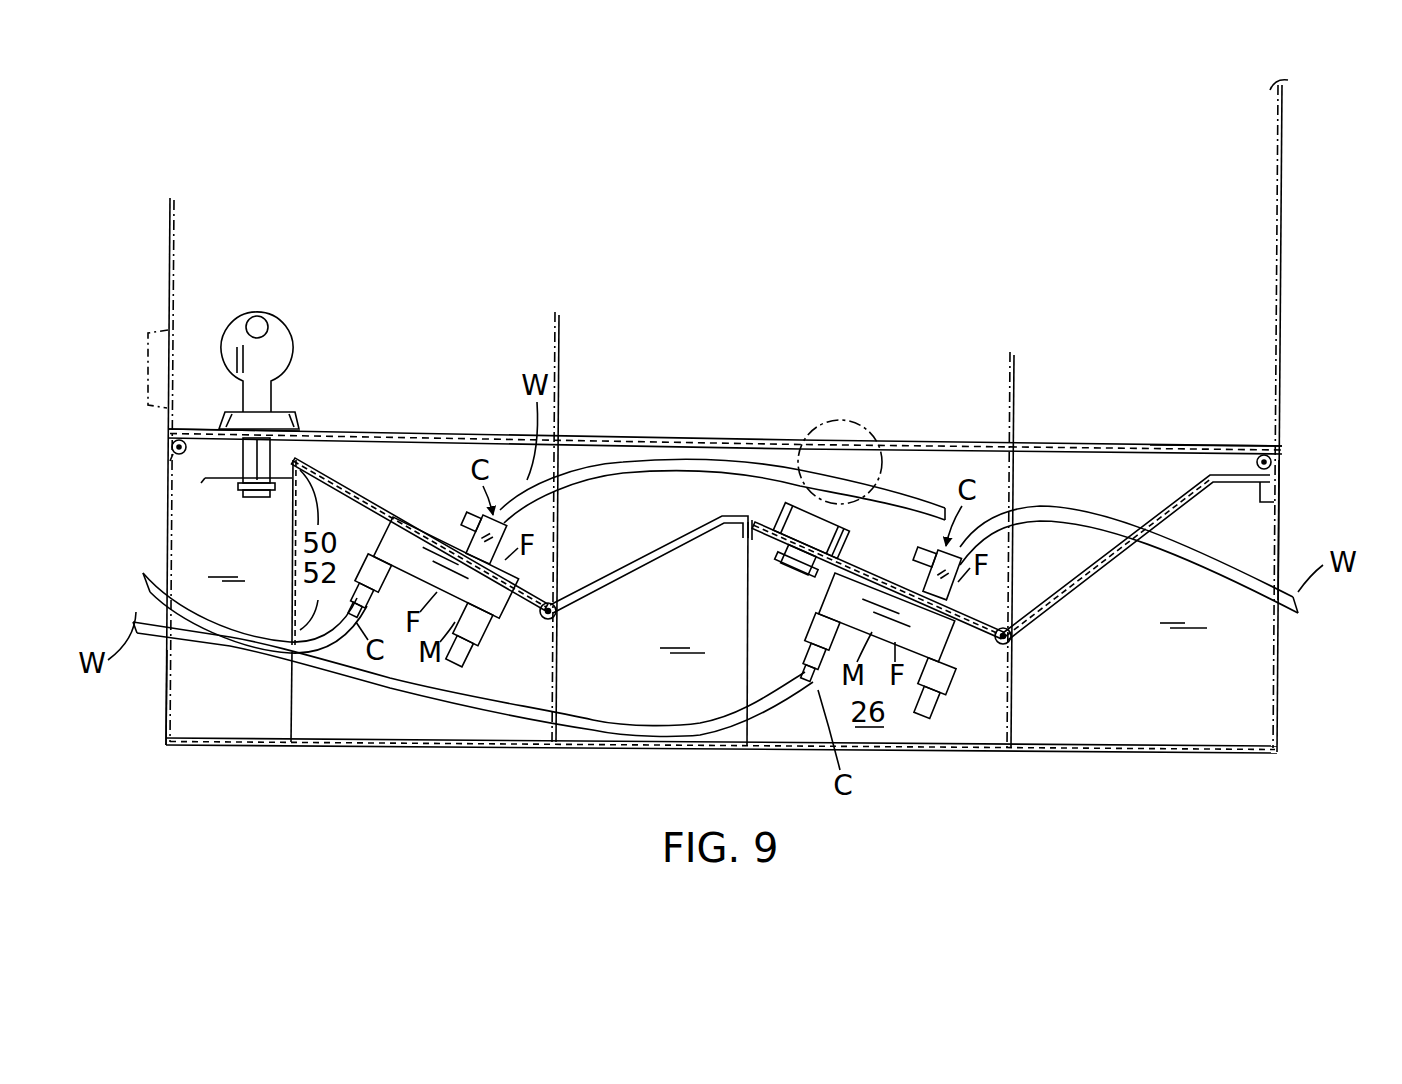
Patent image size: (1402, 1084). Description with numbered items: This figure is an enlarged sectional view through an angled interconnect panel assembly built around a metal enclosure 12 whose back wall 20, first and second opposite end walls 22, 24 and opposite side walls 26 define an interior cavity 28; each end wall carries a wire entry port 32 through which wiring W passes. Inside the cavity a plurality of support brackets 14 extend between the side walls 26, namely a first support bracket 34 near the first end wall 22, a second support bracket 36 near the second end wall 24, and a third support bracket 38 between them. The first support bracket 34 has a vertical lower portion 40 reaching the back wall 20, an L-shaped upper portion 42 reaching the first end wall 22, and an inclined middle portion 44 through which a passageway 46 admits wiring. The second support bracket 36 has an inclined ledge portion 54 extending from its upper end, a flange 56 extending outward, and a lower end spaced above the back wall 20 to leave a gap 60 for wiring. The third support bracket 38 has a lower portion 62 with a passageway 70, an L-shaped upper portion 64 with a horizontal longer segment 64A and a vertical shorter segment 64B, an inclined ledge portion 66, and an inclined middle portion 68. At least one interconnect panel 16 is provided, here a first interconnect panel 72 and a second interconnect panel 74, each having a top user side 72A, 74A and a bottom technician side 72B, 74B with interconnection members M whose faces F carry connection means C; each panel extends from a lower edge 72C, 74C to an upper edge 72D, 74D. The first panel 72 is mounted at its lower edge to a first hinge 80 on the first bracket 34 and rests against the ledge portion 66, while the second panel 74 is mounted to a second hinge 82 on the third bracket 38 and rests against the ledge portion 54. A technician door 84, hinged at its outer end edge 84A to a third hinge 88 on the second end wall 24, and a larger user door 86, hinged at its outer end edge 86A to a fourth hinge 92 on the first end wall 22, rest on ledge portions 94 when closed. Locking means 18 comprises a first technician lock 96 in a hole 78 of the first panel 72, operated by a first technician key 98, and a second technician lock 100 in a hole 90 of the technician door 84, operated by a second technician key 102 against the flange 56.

The enclosure 12 is at (1210, 758).
The support brackets 14 is at (284, 531).
The interconnect panel 16 is at (407, 433).
The locking means 18 is at (300, 405).
The back wall 20 is at (805, 748).
The first opposite end wall 22 is at (1282, 524).
The second opposite end wall 24 is at (166, 700).
The opposite side walls 26 is at (881, 651).
The interior cavity 28 is at (456, 433).
The wire entry ports 32 is at (141, 578).
The first support bracket 34 is at (1160, 498).
The second support bracket 36 is at (284, 563).
The third support bracket 38 is at (617, 538).
The lower portion 40 is at (1014, 700).
The upper portion 42 is at (1222, 472).
The inclined middle portion 44 is at (1188, 498).
The passageway 46 is at (1122, 505).
The inclined ledge portion 54 is at (378, 485).
The flange 56 is at (215, 480).
The gap 60 is at (293, 690).
The lower portion 62 is at (560, 687).
The upper portion 64 is at (742, 520).
The longer segment 64A is at (718, 525).
The shorter segment 64B is at (744, 540).
The inclined ledge portion 66 is at (795, 548).
The inclined middle portion 68 is at (662, 575).
The passageway 70 is at (560, 650).
The first interconnect panel 72 is at (952, 540).
The user side 72A is at (1080, 572).
The technician side 72B is at (825, 565).
The lower edge 72C is at (1035, 618).
The upper edge 72D is at (790, 528).
The second interconnect panel 74 is at (441, 472).
The user side 74A is at (455, 500).
The technician side 74B is at (382, 690).
The lower edge 74C is at (582, 560).
The upper edge 74D is at (298, 464).
The hole 78 is at (843, 523).
The first hinge 80 is at (990, 665).
The second hinge 82 is at (540, 620).
The technician door 84 is at (363, 432).
The outer end edge 84A is at (168, 430).
The user door 86 is at (759, 530).
The outer end edge 86A is at (1280, 446).
The third hinge 88 is at (172, 455).
The hole 90 is at (258, 422).
The fourth hinge 92 is at (1272, 500).
The ledge portion 94 is at (1097, 444).
The first technician lock 96 is at (890, 548).
The first technician key 98 is at (860, 405).
The second technician lock 100 is at (255, 420).
The second technician key 102 is at (293, 345).